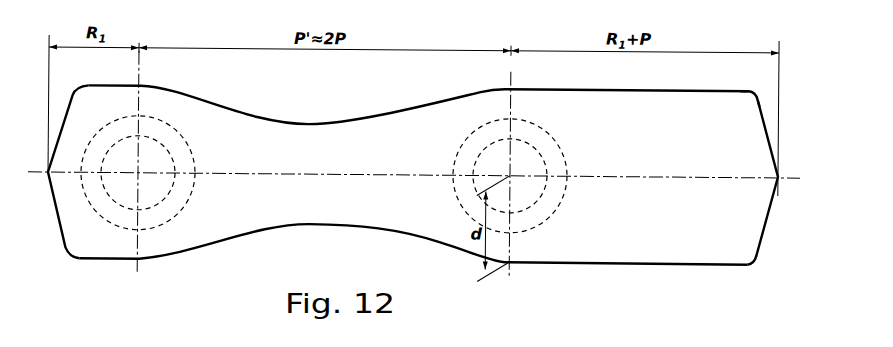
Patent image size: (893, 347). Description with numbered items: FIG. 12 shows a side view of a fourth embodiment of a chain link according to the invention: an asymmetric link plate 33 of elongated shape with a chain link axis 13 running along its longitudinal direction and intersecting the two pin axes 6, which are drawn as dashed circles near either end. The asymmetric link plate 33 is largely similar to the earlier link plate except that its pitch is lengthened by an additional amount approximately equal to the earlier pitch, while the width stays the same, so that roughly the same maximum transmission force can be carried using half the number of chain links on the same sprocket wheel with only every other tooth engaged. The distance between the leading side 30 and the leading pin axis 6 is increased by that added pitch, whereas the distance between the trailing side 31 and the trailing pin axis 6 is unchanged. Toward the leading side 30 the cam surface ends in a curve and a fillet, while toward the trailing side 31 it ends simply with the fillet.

The pin axis 6 is at (139, 171).
The chain link axis 13 is at (380, 170).
The leading side 30 is at (779, 170).
The trailing side 31 is at (60, 226).
The asymmetric link plate 33 is at (746, 100).